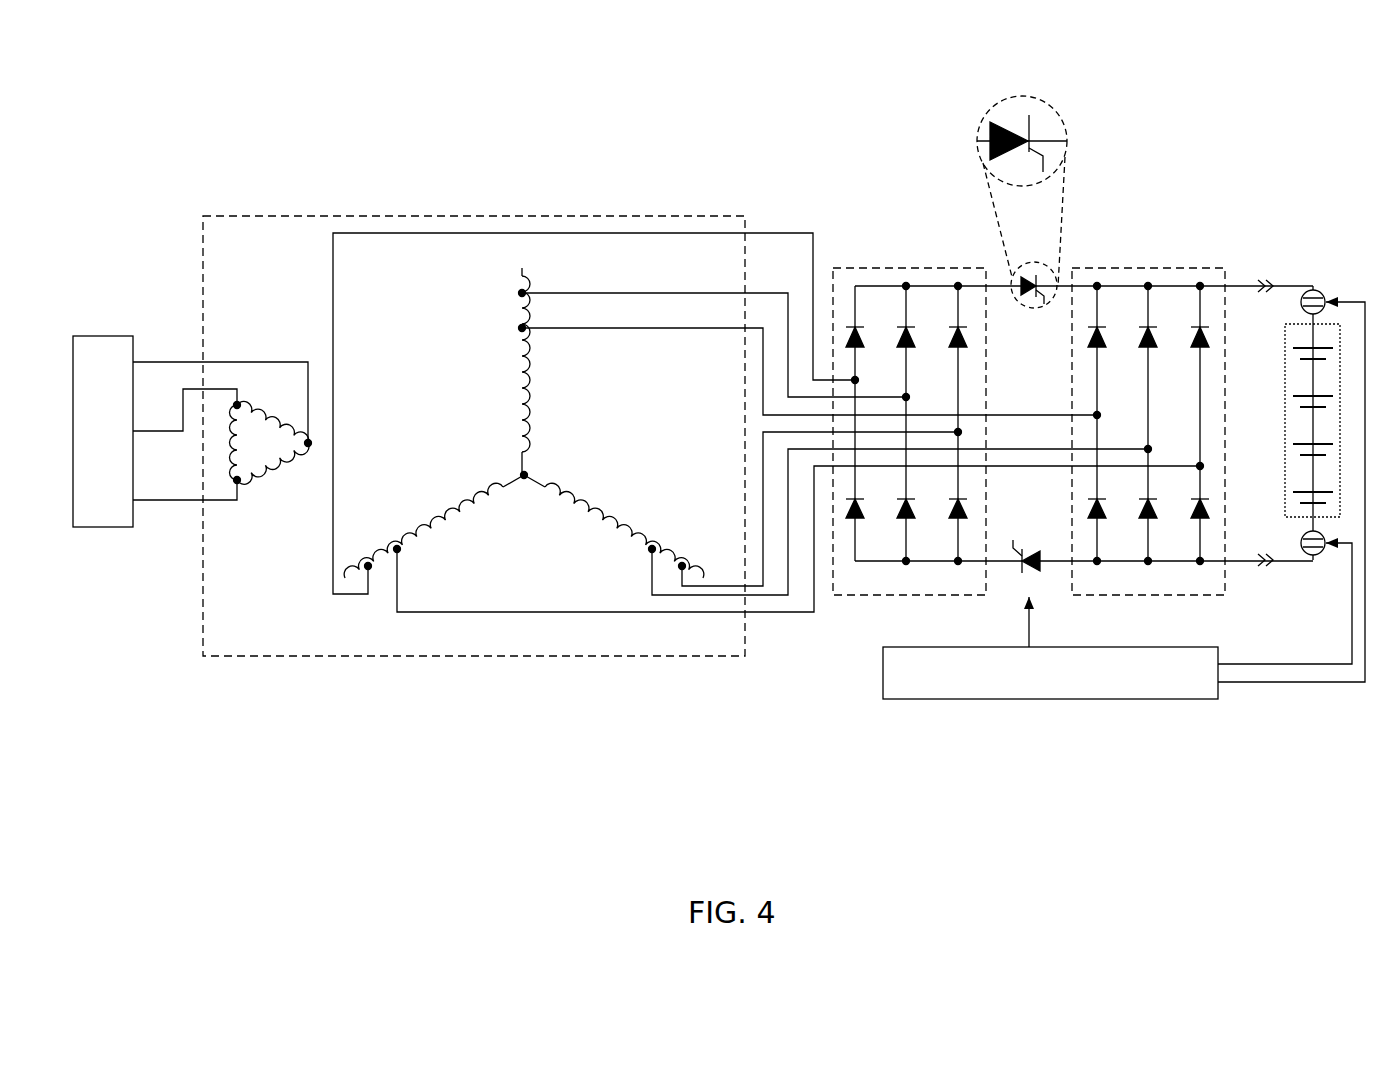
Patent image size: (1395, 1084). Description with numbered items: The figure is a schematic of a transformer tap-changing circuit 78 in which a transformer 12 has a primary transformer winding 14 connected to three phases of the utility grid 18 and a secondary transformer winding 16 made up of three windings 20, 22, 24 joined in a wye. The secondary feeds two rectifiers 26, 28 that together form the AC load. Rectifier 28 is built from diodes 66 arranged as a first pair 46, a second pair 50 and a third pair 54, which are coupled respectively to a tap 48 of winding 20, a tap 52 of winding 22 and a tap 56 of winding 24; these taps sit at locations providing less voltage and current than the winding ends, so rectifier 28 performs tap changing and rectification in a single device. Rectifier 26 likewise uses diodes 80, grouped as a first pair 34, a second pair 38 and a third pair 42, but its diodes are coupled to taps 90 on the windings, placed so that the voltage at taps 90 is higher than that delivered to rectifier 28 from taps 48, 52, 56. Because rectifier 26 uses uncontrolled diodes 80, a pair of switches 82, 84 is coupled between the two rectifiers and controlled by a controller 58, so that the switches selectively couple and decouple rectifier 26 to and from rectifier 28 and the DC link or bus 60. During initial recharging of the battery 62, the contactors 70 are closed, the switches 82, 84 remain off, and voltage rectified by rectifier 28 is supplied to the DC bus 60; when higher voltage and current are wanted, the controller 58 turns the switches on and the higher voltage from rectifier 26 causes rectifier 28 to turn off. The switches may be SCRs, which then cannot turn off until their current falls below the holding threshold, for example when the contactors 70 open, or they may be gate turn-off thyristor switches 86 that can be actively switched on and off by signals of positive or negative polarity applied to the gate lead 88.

The transformer 12 is at (203, 268).
The primary transformer winding 14 is at (278, 344).
The secondary transformer winding 16 is at (766, 422).
The utility grid 18 is at (85, 336).
The winding 20 is at (522, 405).
The winding 22 is at (414, 528).
The winding 24 is at (578, 496).
The rectifier 26 is at (986, 393).
The rectifier 28 is at (1225, 410).
The first pair 34 is at (856, 262).
The second pair 38 is at (908, 262).
The third pair 42 is at (959, 262).
The first pair 46 is at (1099, 262).
The tap 48 is at (522, 328).
The second pair 50 is at (1150, 262).
The tap 52 is at (397, 549).
The third pair 54 is at (1202, 262).
The tap 56 is at (652, 549).
The controller 58 is at (1100, 700).
The DC link or bus 60 is at (1285, 286).
The battery 62 is at (1283, 436).
The diodes 66 is at (1103, 346).
The contactors 70 is at (1301, 309).
The transformer tap-changing circuit 78 is at (883, 143).
The diodes 80 is at (898, 343).
The switch 82 is at (1030, 294).
The switch 84 is at (1036, 550).
The gate turn-off thyristor switch 86 is at (1045, 188).
The gate lead 88 is at (1046, 160).
The taps 90 is at (522, 293).